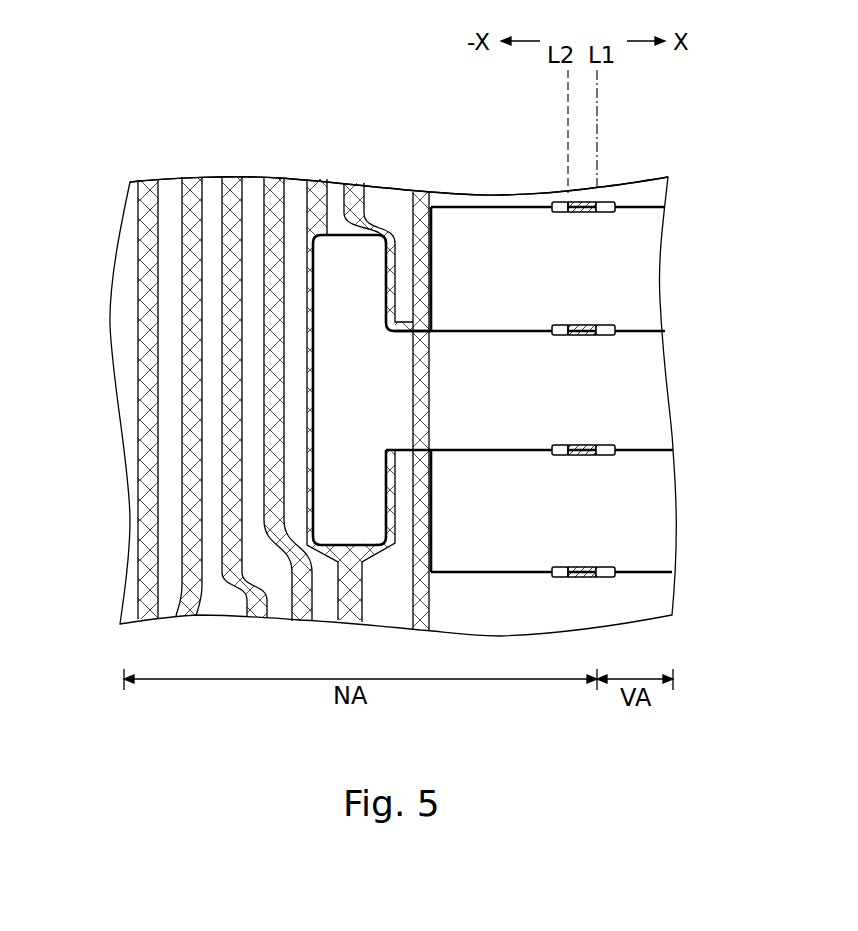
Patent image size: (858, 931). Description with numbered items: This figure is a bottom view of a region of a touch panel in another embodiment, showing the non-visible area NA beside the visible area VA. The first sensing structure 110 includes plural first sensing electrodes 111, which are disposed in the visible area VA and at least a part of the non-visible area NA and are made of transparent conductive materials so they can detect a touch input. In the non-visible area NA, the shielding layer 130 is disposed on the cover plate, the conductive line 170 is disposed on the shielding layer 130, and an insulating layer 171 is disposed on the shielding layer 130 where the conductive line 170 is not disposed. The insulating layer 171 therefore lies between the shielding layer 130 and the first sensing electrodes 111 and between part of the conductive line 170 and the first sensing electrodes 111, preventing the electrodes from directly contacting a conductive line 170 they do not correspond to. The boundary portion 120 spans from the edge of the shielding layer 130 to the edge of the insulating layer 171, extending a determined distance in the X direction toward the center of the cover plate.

The first sensing structure 110 is at (706, 572).
The first sensing electrode 111 is at (650, 270).
The boundary portion 120 is at (540, 180).
The shielding layer 130 is at (592, 328).
The conductive line 170 is at (213, 192).
The insulating layer 171 is at (414, 192).